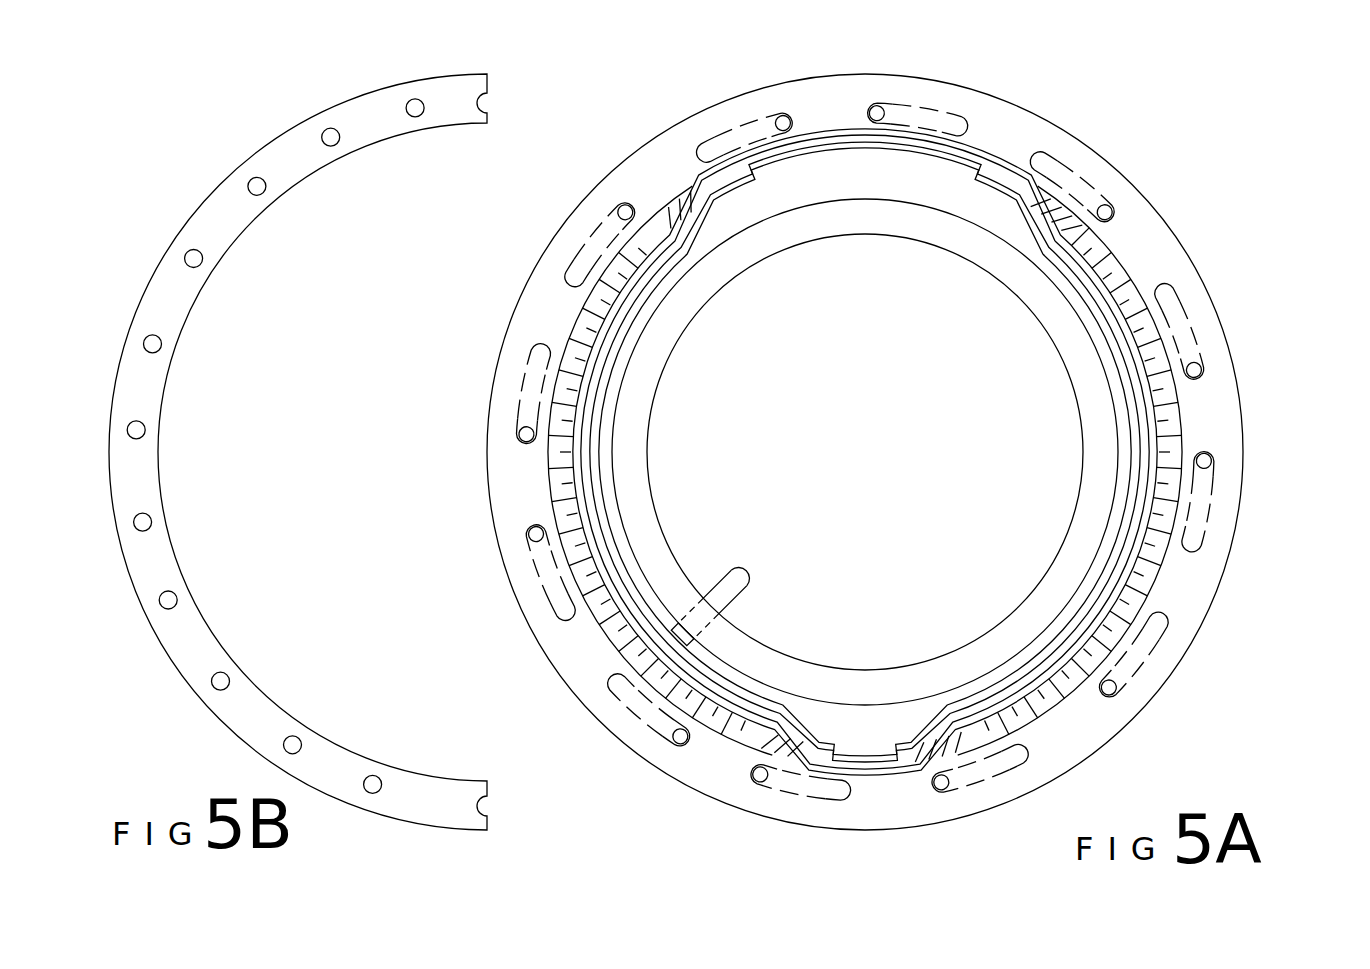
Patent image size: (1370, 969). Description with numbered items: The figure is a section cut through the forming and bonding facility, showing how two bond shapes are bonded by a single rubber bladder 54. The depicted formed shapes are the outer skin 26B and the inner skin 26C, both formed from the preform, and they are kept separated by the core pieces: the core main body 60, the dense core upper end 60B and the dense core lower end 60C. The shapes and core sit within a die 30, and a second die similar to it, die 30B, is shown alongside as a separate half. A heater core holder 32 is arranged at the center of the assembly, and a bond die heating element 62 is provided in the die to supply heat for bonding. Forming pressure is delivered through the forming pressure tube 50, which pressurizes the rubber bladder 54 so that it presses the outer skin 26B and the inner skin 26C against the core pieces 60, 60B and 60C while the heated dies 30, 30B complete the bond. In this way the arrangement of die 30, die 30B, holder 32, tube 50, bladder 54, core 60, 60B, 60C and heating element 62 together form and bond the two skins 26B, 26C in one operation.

In FIG. 5A, the die 30 is at (985, 95).
In FIG. 5A, the die similar to 30 30B is at (488, 528).
In FIG. 5B, the die similar to 30 30B is at (182, 573).
In FIG. 5A, the heater core holder 32 is at (1047, 570).
In FIG. 5A, the forming pressure tube 50 is at (737, 574).
In FIG. 5A, the rubber bladder 54 is at (629, 309).
In FIG. 5A, the core main body 60 is at (1110, 272).
In FIG. 5A, the dense core upper end 60B is at (1055, 210).
In FIG. 5A, the dense core lower end 60C is at (965, 740).
In FIG. 5A, the bond die heating element 62 is at (1113, 207).
In FIG. 5A, the formed shape of outer skin 26B is at (1185, 405).
In FIG. 5A, the formed shape of inner skin 26C is at (1158, 450).